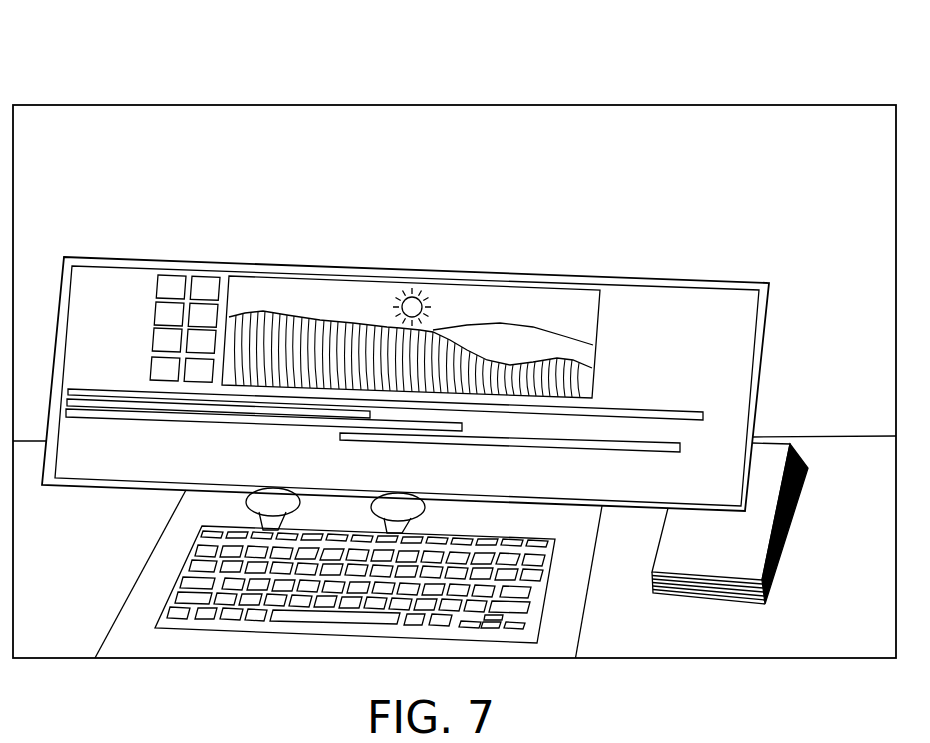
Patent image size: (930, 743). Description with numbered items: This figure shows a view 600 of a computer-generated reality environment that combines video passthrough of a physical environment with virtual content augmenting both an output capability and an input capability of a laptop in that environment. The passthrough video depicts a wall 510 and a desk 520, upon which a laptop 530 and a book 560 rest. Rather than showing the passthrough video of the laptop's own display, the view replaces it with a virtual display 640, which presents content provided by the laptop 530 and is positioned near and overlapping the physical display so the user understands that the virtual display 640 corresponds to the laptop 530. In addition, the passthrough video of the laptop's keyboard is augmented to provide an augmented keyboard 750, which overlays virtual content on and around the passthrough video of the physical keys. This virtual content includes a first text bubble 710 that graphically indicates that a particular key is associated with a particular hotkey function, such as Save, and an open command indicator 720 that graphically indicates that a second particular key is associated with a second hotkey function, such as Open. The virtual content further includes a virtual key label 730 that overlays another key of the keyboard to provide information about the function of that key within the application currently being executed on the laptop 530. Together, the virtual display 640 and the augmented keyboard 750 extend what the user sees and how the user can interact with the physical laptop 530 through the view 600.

The view 600 is at (128, 47).
The wall 510 is at (78, 147).
The desk 520 is at (68, 546).
The laptop 530 is at (120, 613).
The book 560 is at (782, 441).
The virtual display 640 is at (264, 463).
The first text bubble 710 is at (247, 502).
The open command indicator 720 is at (424, 505).
The virtual key label 730 is at (290, 606).
The augmented keyboard 750 is at (192, 546).